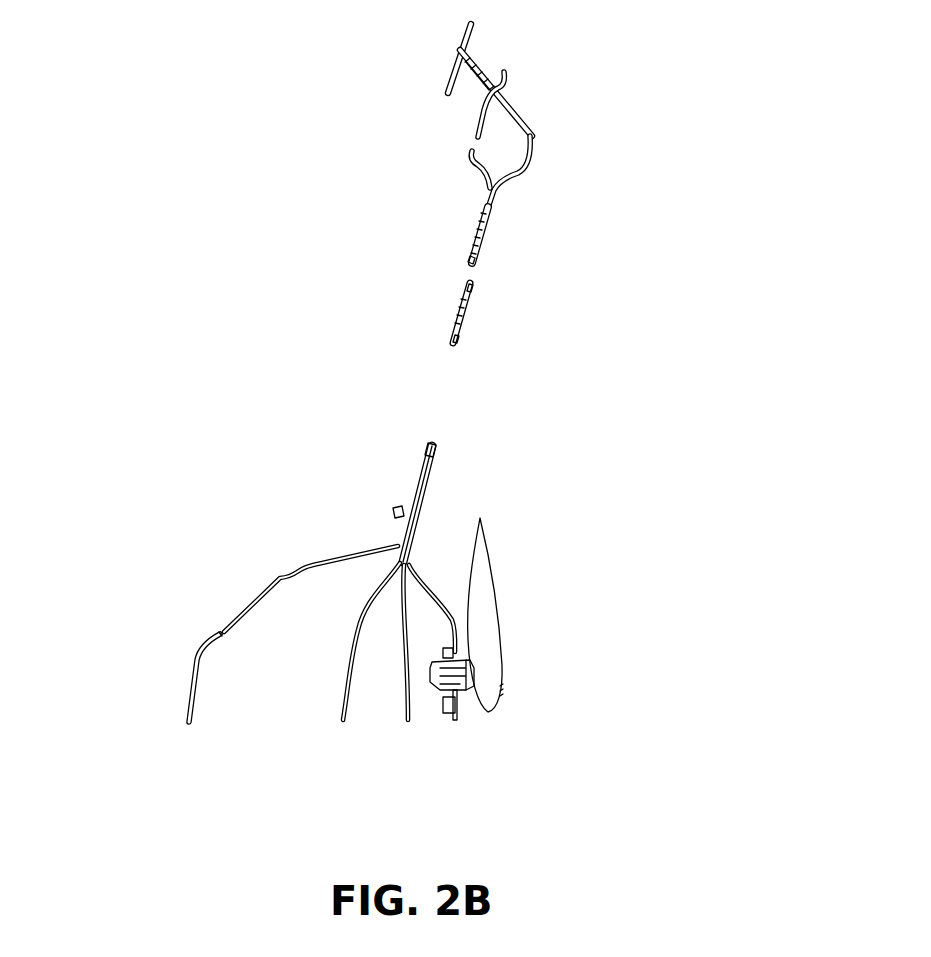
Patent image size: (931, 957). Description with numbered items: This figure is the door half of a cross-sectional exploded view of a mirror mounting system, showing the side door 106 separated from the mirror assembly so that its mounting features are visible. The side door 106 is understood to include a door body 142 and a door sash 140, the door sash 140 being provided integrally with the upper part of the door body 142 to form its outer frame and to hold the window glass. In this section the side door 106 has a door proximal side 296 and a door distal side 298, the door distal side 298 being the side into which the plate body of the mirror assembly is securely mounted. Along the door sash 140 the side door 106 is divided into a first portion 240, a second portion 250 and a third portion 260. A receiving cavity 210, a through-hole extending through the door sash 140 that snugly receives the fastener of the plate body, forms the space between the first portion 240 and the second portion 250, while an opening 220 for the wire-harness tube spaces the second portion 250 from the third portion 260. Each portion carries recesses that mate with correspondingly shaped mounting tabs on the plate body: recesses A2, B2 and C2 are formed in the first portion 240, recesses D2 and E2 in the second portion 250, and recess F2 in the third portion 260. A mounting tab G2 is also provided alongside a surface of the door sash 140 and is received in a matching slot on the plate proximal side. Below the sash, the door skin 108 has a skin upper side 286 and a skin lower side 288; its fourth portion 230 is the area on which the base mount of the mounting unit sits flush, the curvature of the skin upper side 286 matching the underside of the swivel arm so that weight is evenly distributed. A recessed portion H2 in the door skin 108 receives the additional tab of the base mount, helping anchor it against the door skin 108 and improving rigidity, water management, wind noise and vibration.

The side door 106 is at (330, 148).
The door distal side 298 is at (223, 217).
The door sash 140 is at (509, 182).
The receiving cavity 210 is at (484, 279).
The opening 220 is at (460, 400).
The door proximal side 296 is at (652, 105).
The first portion 240 is at (612, 28).
The second portion 250 is at (612, 272).
The third portion 260 is at (612, 440).
The fourth portion 230 is at (372, 459).
The skin upper side 286 is at (243, 580).
The skin lower side 288 is at (253, 665).
The door skin 108 is at (281, 635).
The door body 142 is at (170, 682).
The recessed portion A2 is at (468, 140).
The recessed portion B2 is at (477, 202).
The recessed portion C2 is at (467, 250).
The recessed portion D2 is at (458, 300).
The recessed portion E2 is at (450, 331).
The recessed portion F2 is at (421, 454).
The mounting tab G2 is at (384, 512).
The recessed portion H2 is at (216, 627).